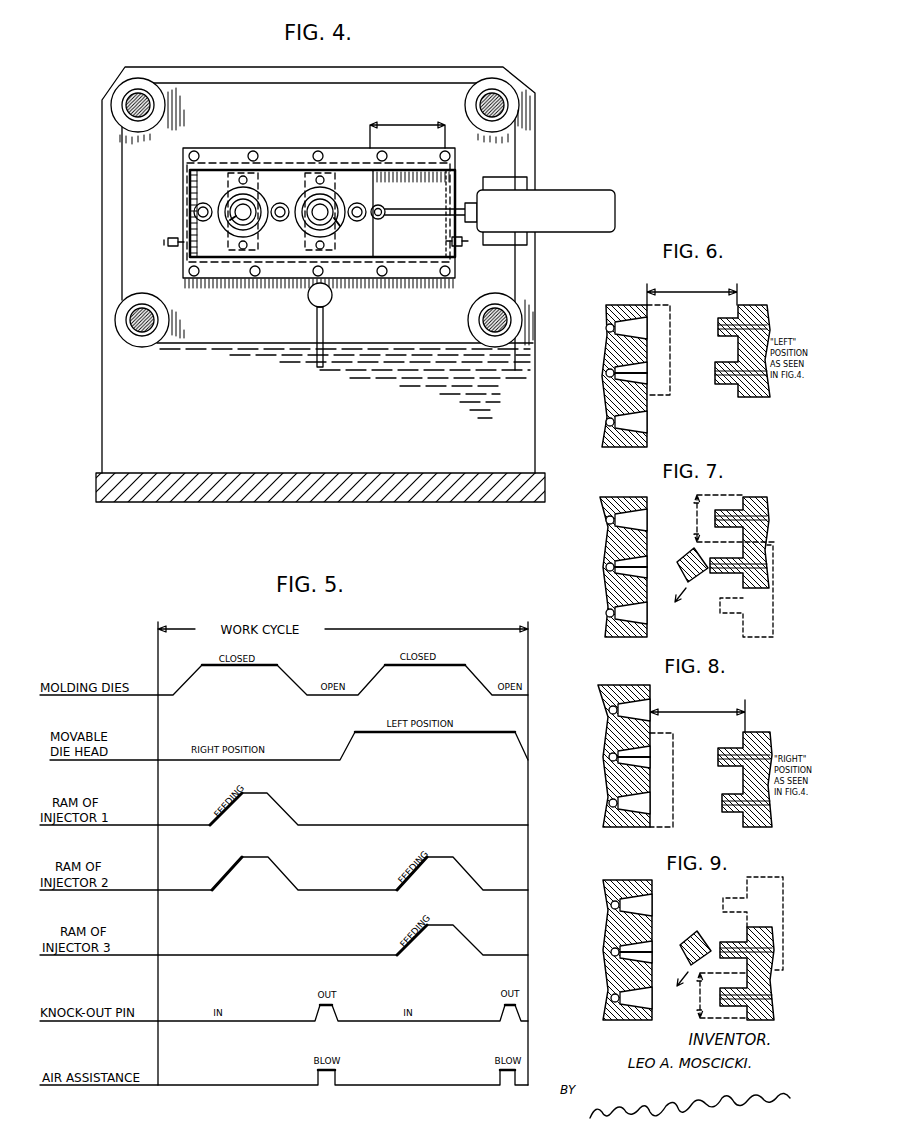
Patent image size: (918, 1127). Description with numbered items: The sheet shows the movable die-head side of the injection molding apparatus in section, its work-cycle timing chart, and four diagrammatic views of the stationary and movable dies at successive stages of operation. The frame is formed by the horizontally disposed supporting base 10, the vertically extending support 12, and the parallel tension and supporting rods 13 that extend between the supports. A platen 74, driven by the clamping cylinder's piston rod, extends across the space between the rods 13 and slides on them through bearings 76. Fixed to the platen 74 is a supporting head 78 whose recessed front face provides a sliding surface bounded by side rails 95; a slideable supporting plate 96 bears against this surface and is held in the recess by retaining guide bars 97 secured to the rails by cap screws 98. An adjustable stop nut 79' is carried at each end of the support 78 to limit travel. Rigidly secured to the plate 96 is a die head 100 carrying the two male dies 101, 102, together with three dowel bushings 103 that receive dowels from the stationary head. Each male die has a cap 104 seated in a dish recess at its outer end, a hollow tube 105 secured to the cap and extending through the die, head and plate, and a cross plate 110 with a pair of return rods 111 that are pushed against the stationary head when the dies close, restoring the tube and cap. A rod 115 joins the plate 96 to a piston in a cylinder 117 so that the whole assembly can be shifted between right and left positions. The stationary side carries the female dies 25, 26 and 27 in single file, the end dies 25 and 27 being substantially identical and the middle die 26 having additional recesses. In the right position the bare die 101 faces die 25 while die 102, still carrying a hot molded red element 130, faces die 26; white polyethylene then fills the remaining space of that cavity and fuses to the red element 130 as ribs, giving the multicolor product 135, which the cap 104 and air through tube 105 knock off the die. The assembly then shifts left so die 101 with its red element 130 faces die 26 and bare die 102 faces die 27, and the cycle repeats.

In FIG. 4, the supporting base 10 is at (428, 502).
In FIG. 4, the vertical support 12 is at (108, 398).
In FIG. 4, the tension and supporting rods 13 is at (133, 104).
In FIG. 4, the platen 74 is at (424, 90).
In FIG. 4, the bearings 76 is at (122, 117).
In FIG. 4, the supporting plate or head 78 is at (434, 191).
In FIG. 4, the adjustable stop nut 79' is at (318, 257).
In FIG. 4, the side rails 95 is at (183, 166).
In FIG. 4, the slideable supporting plate 96 is at (188, 178).
In FIG. 4, the retaining guide bars 97 is at (298, 150).
In FIG. 4, the cap screws 98 is at (252, 151).
In FIG. 4, the die head 100 is at (200, 189).
In FIG. 4, the male die 101 is at (340, 224).
In FIG. 6, the male die 101 is at (730, 386).
In FIG. 7, the male die 101 is at (730, 573).
In FIG. 8, the male die 101 is at (736, 808).
In FIG. 9, the male die 101 is at (738, 988).
In FIG. 4, the male die 102 is at (232, 220).
In FIG. 6, the male die 102 is at (728, 320).
In FIG. 7, the male die 102 is at (738, 505).
In FIG. 8, the male die 102 is at (736, 748).
In FIG. 9, the male die 102 is at (740, 945).
In FIG. 4, the dowel bushings 103 is at (198, 212).
In FIG. 4, the cap 104 is at (243, 215).
In FIG. 7, the hollow tube 105 is at (745, 568).
In FIG. 9, the hollow tube 105 is at (760, 926).
In FIG. 4, the cross plate 110 is at (213, 285).
In FIG. 4, the rods 111 is at (248, 182).
In FIG. 4, the rod 115 is at (414, 214).
In FIG. 4, the cylinder 117 is at (598, 202).
In FIG. 6, the molded red element 130 is at (722, 368).
In FIG. 7, the molded red element 130 is at (730, 516).
In FIG. 8, the molded red element 130 is at (720, 760).
In FIG. 9, the molded red element 130 is at (722, 1000).
In FIG. 7, the multicolor product 135 is at (692, 588).
In FIG. 9, the multicolor product 135 is at (692, 942).
In FIG. 6, the female die 25 is at (638, 423).
In FIG. 7, the female die 25 is at (640, 615).
In FIG. 8, the female die 25 is at (643, 805).
In FIG. 9, the female die 25 is at (642, 998).
In FIG. 6, the female die 26 is at (640, 370).
In FIG. 7, the female die 26 is at (640, 560).
In FIG. 8, the female die 26 is at (645, 757).
In FIG. 9, the female die 26 is at (642, 949).
In FIG. 6, the female die 27 is at (638, 320).
In FIG. 7, the female die 27 is at (638, 525).
In FIG. 8, the female die 27 is at (640, 708).
In FIG. 9, the female die 27 is at (640, 906).